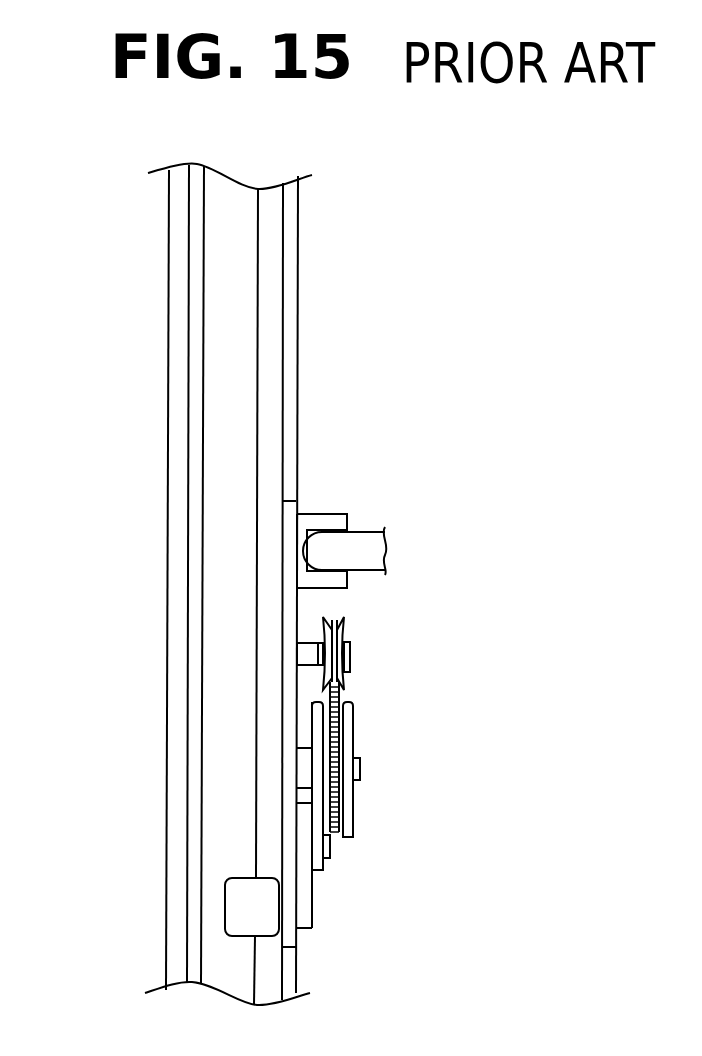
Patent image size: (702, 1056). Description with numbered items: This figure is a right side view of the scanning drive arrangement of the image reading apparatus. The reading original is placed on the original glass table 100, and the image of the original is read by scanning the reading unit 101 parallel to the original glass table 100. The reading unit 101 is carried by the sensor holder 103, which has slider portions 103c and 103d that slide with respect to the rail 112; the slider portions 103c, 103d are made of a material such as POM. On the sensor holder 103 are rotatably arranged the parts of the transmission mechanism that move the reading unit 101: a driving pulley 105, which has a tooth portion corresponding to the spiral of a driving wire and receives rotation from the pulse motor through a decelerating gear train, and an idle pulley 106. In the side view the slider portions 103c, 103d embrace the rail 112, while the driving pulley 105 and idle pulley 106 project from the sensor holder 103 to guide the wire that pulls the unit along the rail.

The original glass table 100 is at (173, 757).
The reading unit 101 is at (212, 673).
The sensor holder 103 is at (288, 975).
The slider portion 103c is at (337, 570).
The slider portion 103d is at (332, 530).
The rail 112 is at (358, 542).
The idle pulley 106 is at (335, 679).
The driving pulley 105 is at (347, 740).